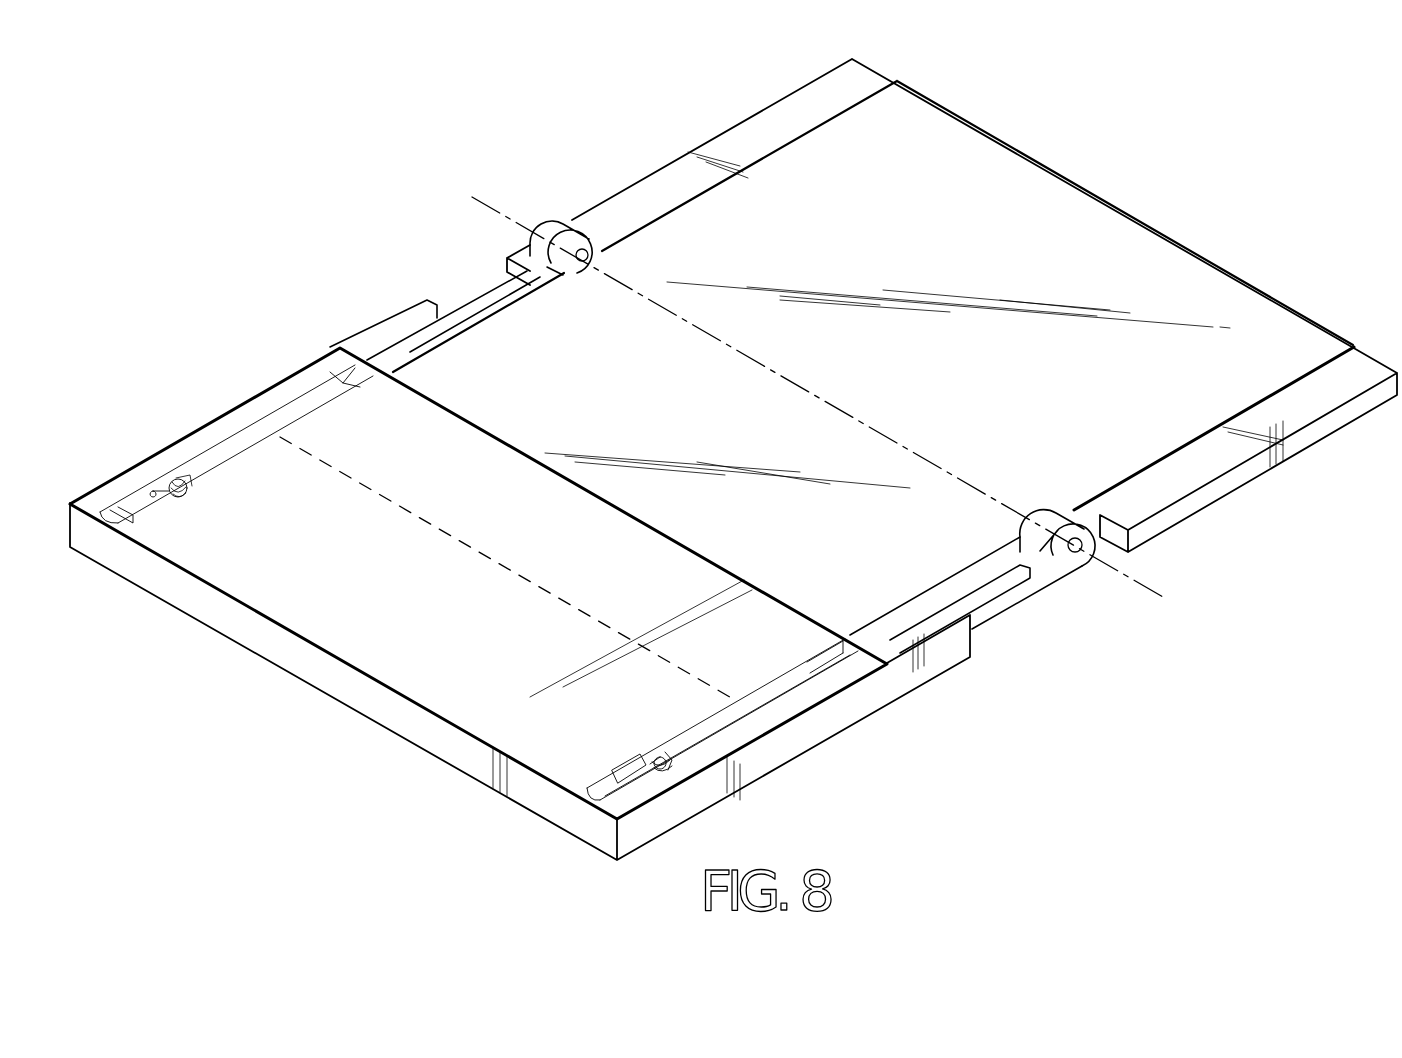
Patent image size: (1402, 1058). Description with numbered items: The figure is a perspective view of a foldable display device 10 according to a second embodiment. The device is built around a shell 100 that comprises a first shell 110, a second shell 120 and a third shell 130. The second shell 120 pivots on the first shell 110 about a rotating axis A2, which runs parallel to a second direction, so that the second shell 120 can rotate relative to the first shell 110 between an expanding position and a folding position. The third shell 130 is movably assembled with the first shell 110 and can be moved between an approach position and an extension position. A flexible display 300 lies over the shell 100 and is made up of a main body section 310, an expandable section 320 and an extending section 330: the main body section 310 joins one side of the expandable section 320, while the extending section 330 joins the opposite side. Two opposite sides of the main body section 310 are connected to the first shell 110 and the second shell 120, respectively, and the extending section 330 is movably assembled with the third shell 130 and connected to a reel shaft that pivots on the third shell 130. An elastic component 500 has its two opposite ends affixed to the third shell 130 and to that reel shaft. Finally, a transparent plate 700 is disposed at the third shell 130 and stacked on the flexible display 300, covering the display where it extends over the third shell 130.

The foldable display device 10 is at (354, 102).
The shell 100 is at (733, 462).
The first shell 110 is at (1008, 602).
The second shell 120 is at (1260, 465).
The third shell 130 is at (400, 707).
The flexible display 300 is at (1025, 252).
The main body section 310 is at (917, 266).
The expandable section 320 is at (440, 608).
The extending section 330 is at (627, 777).
The elastic component 500 is at (177, 482).
The transparent plate 700 is at (357, 452).
The rotating axis A2 is at (838, 407).